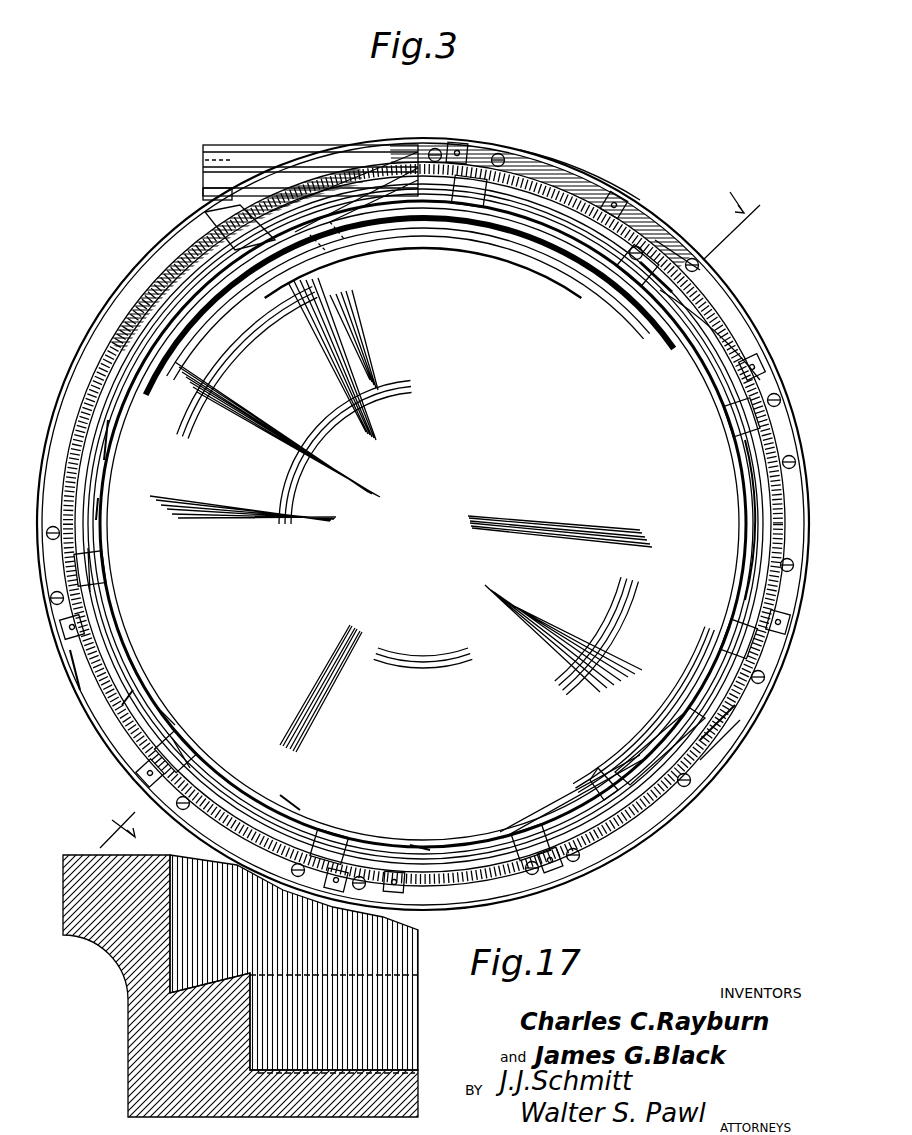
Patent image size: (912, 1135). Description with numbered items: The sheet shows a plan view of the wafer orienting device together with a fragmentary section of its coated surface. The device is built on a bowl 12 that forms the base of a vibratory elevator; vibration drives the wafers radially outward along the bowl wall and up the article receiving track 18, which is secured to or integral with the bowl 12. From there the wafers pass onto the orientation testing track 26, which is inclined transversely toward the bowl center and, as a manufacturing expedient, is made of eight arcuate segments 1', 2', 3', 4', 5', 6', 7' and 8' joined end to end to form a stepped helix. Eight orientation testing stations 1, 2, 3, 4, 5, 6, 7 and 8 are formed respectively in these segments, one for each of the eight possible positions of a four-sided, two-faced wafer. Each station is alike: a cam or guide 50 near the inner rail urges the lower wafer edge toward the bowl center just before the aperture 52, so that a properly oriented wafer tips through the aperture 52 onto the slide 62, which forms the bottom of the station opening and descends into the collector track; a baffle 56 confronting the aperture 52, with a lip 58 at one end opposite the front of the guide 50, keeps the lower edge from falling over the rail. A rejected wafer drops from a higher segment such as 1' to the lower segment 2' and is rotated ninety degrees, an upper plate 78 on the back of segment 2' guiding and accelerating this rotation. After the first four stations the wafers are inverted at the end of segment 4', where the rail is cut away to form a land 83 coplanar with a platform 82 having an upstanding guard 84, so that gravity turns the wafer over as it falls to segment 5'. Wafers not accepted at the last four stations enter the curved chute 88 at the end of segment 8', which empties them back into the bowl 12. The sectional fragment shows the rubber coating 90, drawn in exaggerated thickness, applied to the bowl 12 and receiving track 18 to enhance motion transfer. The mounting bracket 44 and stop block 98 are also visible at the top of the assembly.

In FIG. 3, the orientation testing station 1 is at (106, 570).
In FIG. 3, the arcuate segment 1' is at (122, 440).
In FIG. 3, the orientation testing station 2 is at (179, 737).
In FIG. 3, the arcuate segment 2' is at (60, 675).
In FIG. 3, the orientation testing station 3 is at (329, 835).
In FIG. 3, the arcuate segment 3' is at (276, 787).
In FIG. 3, the orientation testing station 4 is at (429, 543).
In FIG. 3, the arcuate segment 4' is at (415, 839).
In FIG. 3, the orientation testing station 5 is at (763, 651).
In FIG. 3, the arcuate segment 5' is at (727, 750).
In FIG. 3, the orientation testing station 6 is at (764, 403).
In FIG. 3, the arcuate segment 6' is at (717, 520).
In FIG. 3, the orientation testing station 7 is at (627, 272).
In FIG. 3, the arcuate segment 7' is at (710, 329).
In FIG. 3, the orientation testing station 8 is at (469, 159).
In FIG. 3, the arcuate segment 8' is at (580, 166).
In FIG. 3, the bowl 12 is at (405, 461).
In FIG. 17, the bowl 12 is at (150, 1036).
In FIG. 3, the article receiving track 18 is at (585, 780).
In FIG. 3, the track 26 is at (690, 672).
In FIG. 3, the mounting bracket 44 is at (330, 150).
In FIG. 3, the guide 50 is at (518, 205).
In FIG. 3, the aperture 52 is at (680, 250).
In FIG. 3, the baffle 56 is at (95, 570).
In FIG. 3, the lip 58 is at (165, 715).
In FIG. 3, the slide 62 is at (660, 280).
In FIG. 3, the upper plate 78 is at (617, 203).
In FIG. 3, the platform 82 is at (730, 722).
In FIG. 3, the land 83 is at (605, 765).
In FIG. 3, the guard 84 is at (640, 735).
In FIG. 3, the chute 88 is at (365, 228).
In FIG. 17, the rubber coating 90 is at (252, 1015).
In FIG. 3, the stop block 98 is at (205, 182).